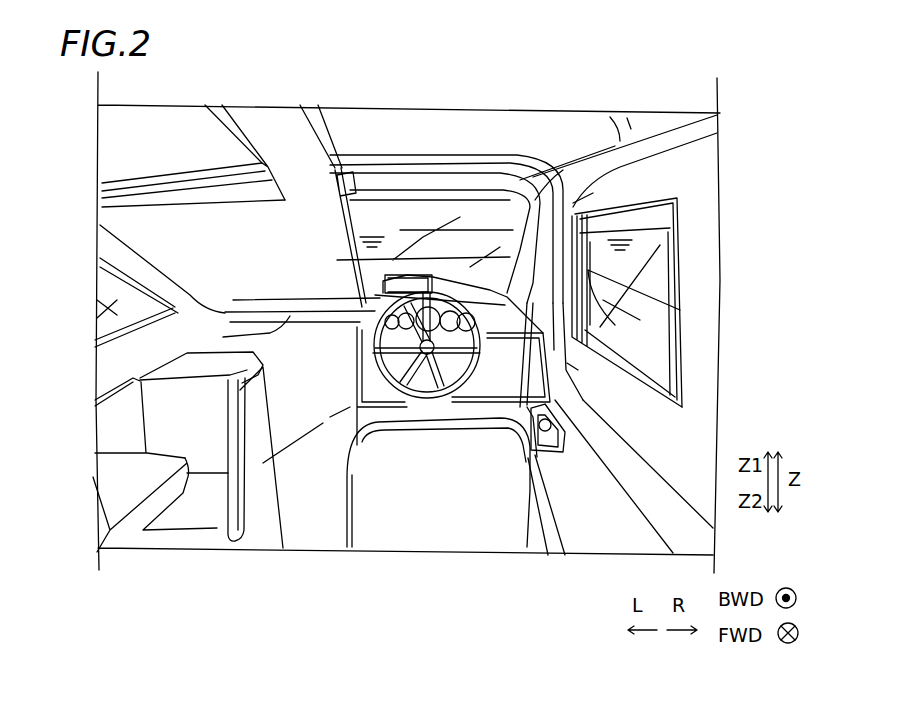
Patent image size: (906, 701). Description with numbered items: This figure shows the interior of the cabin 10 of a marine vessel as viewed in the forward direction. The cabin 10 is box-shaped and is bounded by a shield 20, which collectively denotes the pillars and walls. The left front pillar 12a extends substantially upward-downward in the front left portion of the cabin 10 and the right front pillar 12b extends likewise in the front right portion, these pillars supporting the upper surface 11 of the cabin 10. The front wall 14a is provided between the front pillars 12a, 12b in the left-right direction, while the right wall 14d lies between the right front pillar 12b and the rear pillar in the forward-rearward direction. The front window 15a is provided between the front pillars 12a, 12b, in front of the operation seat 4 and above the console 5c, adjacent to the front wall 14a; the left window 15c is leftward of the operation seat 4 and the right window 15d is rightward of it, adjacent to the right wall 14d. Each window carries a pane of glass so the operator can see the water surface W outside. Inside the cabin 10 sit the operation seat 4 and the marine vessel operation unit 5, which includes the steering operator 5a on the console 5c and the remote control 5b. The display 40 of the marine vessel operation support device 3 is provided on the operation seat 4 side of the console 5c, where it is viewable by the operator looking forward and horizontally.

The cabin 10 is at (218, 97).
The shield 20 is at (408, 322).
The upper surface 11 is at (290, 130).
The front pillar 12a is at (133, 253).
The front pillar 12b is at (578, 212).
The front wall 14a is at (270, 258).
The right wall 14d is at (708, 261).
The front window 15a is at (487, 210).
The left window 15c is at (148, 292).
The right window 15d is at (647, 203).
The water surface W is at (400, 226).
The display 40 is at (355, 322).
The marine vessel operation support device 3 is at (386, 360).
The marine vessel operation unit 5 is at (521, 366).
The steering operator 5a is at (478, 383).
The remote control 5b is at (532, 410).
The console 5c is at (473, 407).
The operation seat 4 is at (487, 513).